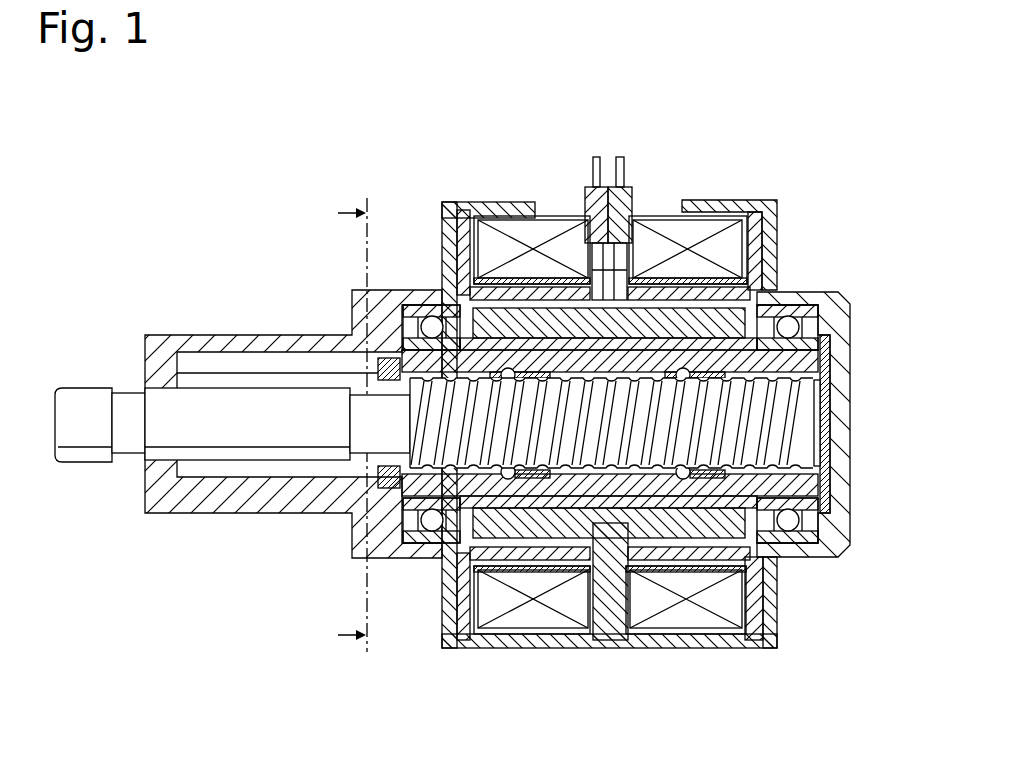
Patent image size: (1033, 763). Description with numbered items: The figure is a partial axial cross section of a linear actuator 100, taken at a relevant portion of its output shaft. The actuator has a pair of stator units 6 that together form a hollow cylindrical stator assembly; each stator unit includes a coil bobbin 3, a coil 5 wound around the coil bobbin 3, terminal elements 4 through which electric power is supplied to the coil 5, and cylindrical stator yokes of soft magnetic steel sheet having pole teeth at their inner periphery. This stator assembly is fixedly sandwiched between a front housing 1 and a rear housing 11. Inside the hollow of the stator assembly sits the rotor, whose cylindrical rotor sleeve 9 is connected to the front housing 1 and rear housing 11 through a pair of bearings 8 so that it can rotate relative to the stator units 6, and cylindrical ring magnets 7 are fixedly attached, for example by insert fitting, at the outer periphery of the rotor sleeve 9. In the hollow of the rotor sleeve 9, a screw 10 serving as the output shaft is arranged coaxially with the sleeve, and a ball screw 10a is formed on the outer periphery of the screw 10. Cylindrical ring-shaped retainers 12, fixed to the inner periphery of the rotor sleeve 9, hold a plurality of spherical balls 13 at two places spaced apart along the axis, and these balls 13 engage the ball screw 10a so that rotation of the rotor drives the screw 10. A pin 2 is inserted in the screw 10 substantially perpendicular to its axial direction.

The linear actuator 100 is at (180, 181).
The front housing 1 is at (330, 503).
The pin 2 is at (383, 360).
The coil bobbin 3 is at (593, 205).
The terminal elements 4 is at (592, 185).
The coil 5 is at (653, 240).
The stator units 6 is at (715, 203).
The ring magnets 7 is at (703, 318).
The bearings 8 is at (797, 307).
The rotor sleeve 9 is at (813, 325).
The screw 10 is at (770, 430).
The ball screw 10a is at (755, 408).
The rear housing 11 is at (843, 470).
The retainers 12 is at (813, 488).
The balls 13 is at (683, 475).